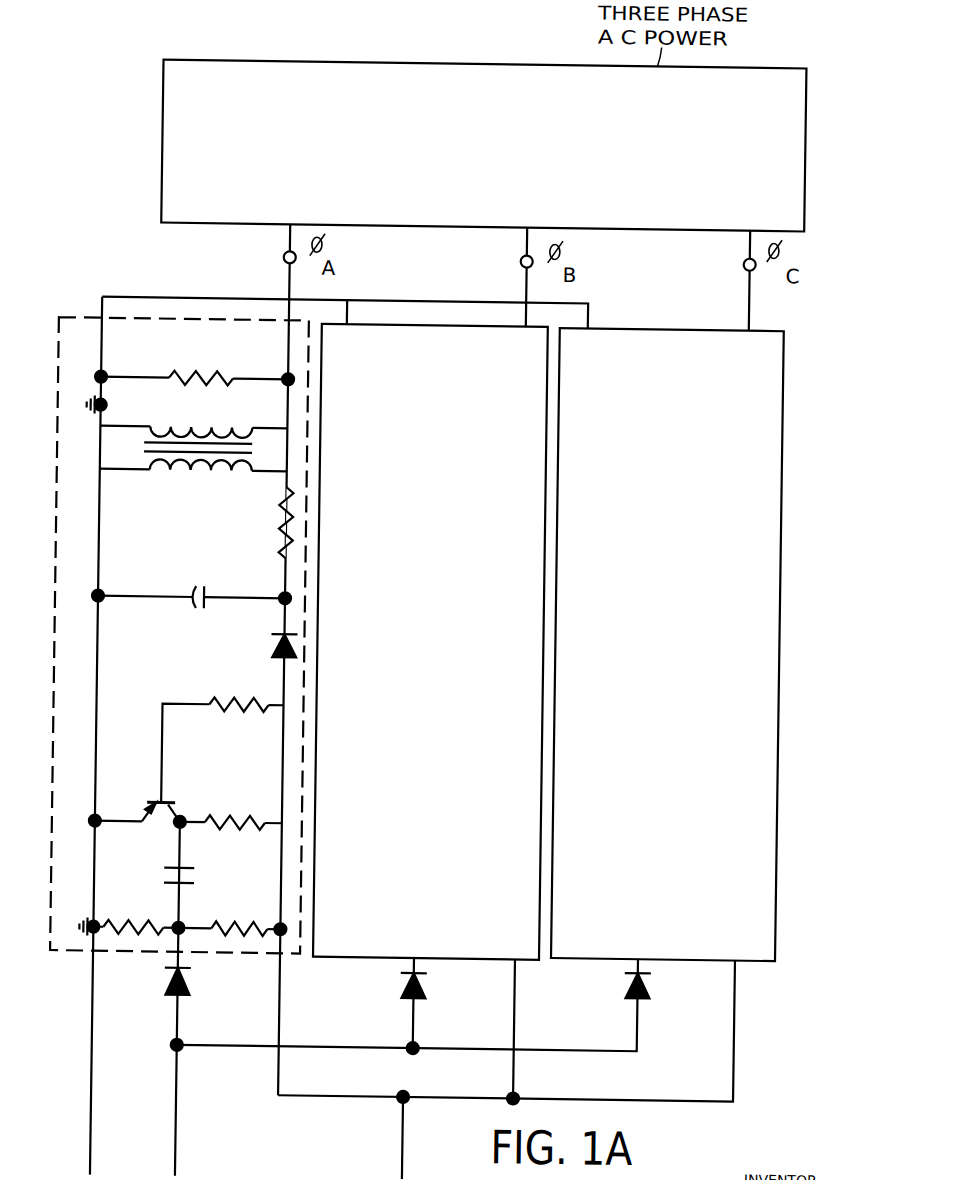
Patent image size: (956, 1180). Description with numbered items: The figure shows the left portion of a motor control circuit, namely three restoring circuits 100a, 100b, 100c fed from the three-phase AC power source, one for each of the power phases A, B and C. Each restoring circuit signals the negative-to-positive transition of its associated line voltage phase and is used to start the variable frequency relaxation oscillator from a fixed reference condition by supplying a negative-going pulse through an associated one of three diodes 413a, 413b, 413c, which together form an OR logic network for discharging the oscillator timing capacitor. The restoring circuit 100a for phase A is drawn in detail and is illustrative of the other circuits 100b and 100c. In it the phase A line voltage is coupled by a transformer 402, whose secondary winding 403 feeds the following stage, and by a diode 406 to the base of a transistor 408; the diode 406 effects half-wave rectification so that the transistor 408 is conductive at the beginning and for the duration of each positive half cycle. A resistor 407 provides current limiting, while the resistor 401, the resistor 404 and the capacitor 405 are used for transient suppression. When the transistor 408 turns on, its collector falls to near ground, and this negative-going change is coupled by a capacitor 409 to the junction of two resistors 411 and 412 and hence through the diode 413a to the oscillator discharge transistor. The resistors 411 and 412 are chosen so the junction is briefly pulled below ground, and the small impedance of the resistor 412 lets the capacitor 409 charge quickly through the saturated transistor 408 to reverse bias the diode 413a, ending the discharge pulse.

The restoring circuit 100a is at (136, 323).
The restoring circuit 100b is at (433, 326).
The restoring circuit 100c is at (782, 416).
The transient suppression element 401 is at (213, 382).
The transformer 402 is at (138, 448).
The transformer secondary winding 403 is at (187, 477).
The transient suppression element 404 is at (277, 536).
The transient suppression element 405 is at (190, 612).
The diode 406 is at (276, 651).
The resistor 407 is at (250, 714).
The transistor 408 is at (151, 818).
The capacitor 409 is at (169, 873).
The resistor 411 is at (141, 923).
The resistor 412 is at (236, 925).
The diode 413a is at (195, 994).
The diode 413b is at (431, 993).
The diode 413c is at (656, 997).